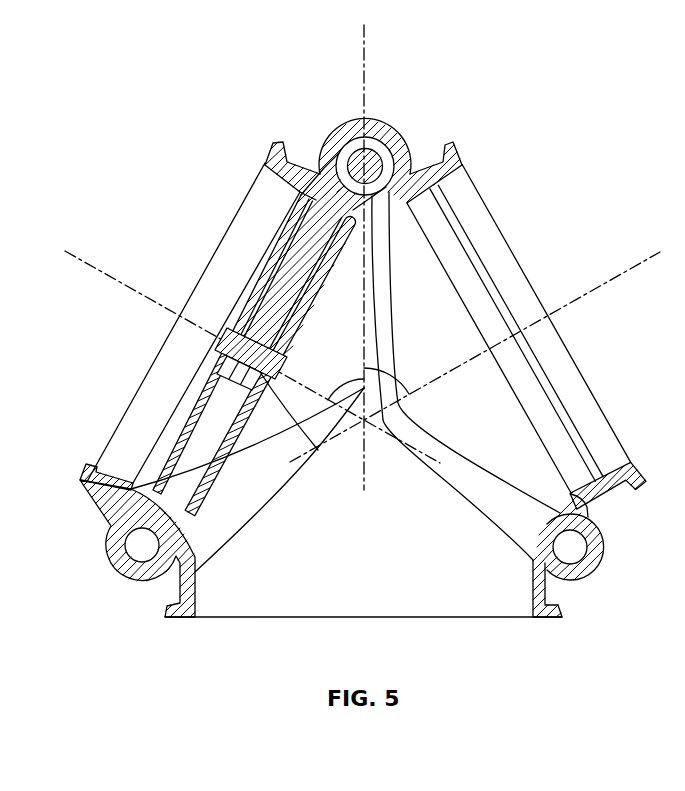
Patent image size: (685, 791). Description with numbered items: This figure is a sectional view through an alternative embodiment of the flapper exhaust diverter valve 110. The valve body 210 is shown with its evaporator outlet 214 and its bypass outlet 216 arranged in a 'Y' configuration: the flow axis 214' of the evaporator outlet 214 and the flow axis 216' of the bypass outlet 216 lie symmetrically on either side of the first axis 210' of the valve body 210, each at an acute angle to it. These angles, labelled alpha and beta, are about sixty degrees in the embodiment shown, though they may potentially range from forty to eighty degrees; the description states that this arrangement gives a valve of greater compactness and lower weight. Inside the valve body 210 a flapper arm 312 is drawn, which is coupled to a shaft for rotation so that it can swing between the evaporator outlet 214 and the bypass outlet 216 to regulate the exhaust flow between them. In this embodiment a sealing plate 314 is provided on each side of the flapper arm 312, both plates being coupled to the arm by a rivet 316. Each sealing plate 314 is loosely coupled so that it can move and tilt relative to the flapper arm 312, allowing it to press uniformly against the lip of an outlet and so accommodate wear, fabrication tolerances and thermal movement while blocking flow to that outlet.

The flapper exhaust diverter valve 110 is at (178, 95).
The valve body 210 is at (342, 396).
The first axis 210' is at (319, 257).
The evaporator outlet 214 is at (200, 316).
The flow axis of evaporator outlet 214' is at (252, 357).
The bypass outlet 216 is at (538, 331).
The flow axis of bypass outlet 216' is at (482, 357).
The flapper arm 312 is at (295, 282).
The sealing plate 314 is at (293, 247).
The rivet 316 is at (318, 447).